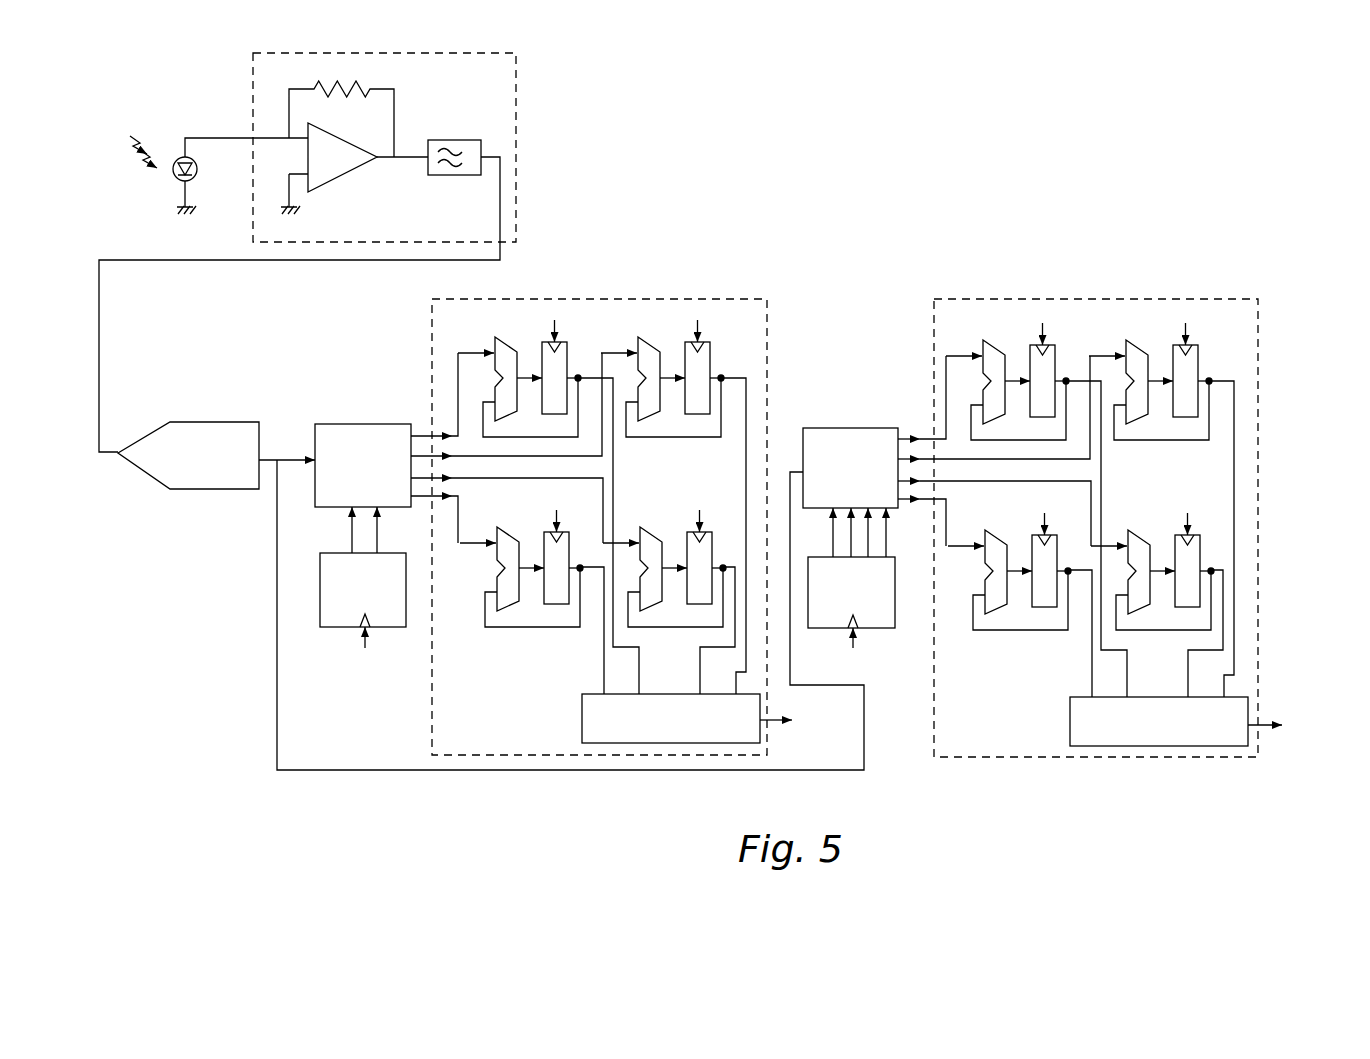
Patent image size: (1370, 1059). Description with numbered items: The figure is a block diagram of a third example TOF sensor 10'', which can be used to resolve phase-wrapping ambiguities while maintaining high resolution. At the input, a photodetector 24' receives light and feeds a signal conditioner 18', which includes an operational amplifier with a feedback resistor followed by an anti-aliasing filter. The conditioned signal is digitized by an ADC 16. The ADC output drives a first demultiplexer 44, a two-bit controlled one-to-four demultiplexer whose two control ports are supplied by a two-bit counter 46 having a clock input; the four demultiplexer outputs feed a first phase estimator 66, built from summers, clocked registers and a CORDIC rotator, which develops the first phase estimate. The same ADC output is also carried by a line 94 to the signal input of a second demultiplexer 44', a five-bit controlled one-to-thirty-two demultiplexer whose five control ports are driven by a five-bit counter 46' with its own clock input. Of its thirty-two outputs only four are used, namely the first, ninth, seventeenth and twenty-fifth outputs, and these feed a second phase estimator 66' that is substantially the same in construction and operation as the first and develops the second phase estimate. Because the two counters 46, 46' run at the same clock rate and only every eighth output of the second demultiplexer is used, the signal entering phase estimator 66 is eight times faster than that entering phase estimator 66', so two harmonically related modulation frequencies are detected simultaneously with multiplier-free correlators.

The TOF sensor 10'' is at (722, 432).
The photodetector (photodiode) 24' is at (219, 134).
The signal conditioner 18' is at (346, 252).
The ADC 16 is at (213, 489).
The line 94 is at (378, 770).
The demultiplexer 44 is at (363, 436).
The counter 46 is at (374, 591).
The phase estimator 66 is at (633, 498).
The demultiplexer 44' is at (850, 438).
The counter 46' is at (863, 592).
The phase estimator 66' is at (1122, 499).